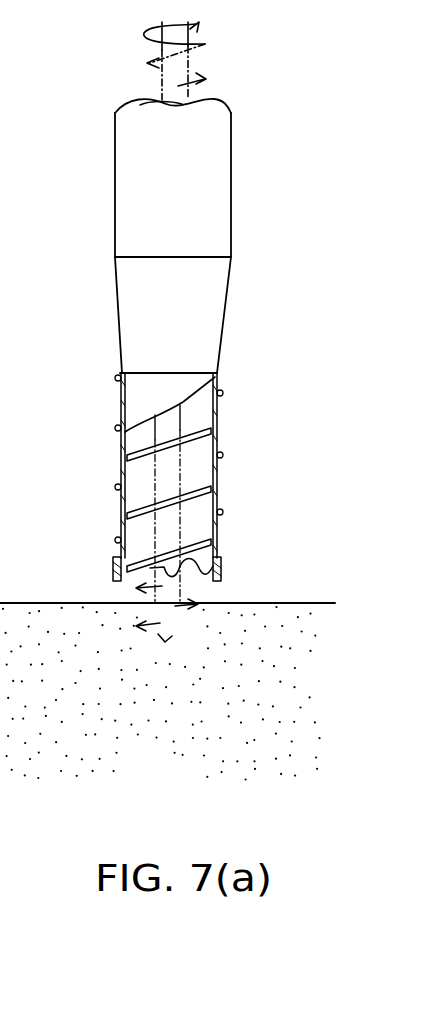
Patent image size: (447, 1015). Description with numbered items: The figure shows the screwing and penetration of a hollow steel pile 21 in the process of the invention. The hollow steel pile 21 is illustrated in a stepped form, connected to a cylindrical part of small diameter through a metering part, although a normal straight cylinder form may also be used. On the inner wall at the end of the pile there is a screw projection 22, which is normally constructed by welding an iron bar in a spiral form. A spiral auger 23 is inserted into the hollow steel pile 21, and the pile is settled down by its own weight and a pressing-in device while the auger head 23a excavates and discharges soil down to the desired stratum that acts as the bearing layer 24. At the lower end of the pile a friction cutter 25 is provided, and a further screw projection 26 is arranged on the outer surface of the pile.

The hollow steel pile 21 is at (208, 203).
The screw projection 22 is at (122, 440).
The spiral auger 23 is at (204, 490).
The auger head 23a is at (165, 643).
The bearing layer 24 is at (310, 673).
The friction cutter 25 is at (118, 572).
The screw projection 26 is at (223, 455).